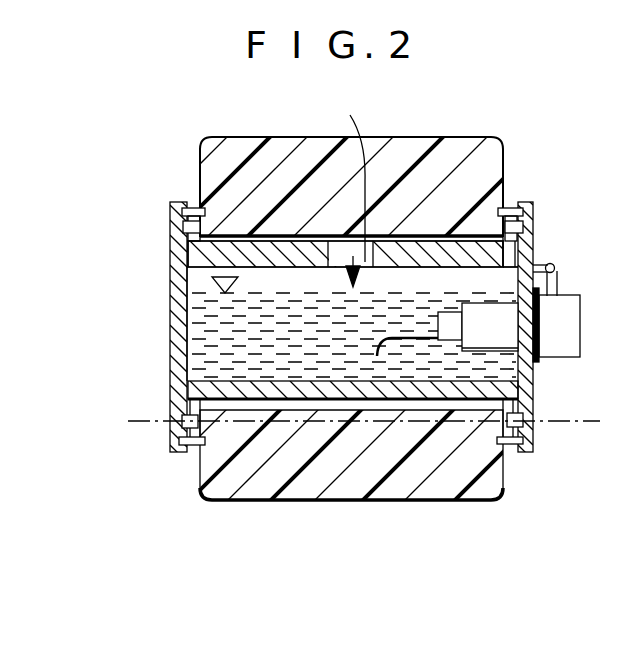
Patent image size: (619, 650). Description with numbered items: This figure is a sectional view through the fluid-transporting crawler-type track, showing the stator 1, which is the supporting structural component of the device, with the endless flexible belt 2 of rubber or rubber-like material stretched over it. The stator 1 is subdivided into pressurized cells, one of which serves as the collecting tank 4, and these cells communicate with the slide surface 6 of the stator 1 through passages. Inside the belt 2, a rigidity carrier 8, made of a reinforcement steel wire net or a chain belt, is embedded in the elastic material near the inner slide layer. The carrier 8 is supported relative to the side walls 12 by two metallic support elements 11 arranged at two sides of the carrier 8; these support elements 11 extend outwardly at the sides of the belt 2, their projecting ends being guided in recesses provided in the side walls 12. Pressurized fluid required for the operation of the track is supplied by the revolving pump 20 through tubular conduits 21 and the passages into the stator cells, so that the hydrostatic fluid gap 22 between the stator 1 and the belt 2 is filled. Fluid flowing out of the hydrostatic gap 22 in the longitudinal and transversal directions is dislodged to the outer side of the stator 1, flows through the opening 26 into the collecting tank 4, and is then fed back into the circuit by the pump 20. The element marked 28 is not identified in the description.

The stator 1 is at (360, 328).
The endless flexible belt 2 is at (351, 480).
The collecting tank 4 is at (210, 312).
The slide surface 6 is at (228, 236).
The rigidity carrier 8 is at (160, 421).
The support elements 11 is at (510, 438).
The side walls 12 is at (178, 352).
The revolving pump 20 is at (557, 345).
The tubular conduits 21 is at (550, 264).
The hydrostatic fluid gap 22 is at (478, 243).
The opening 26 is at (340, 195).
The side plate 28 is at (523, 407).